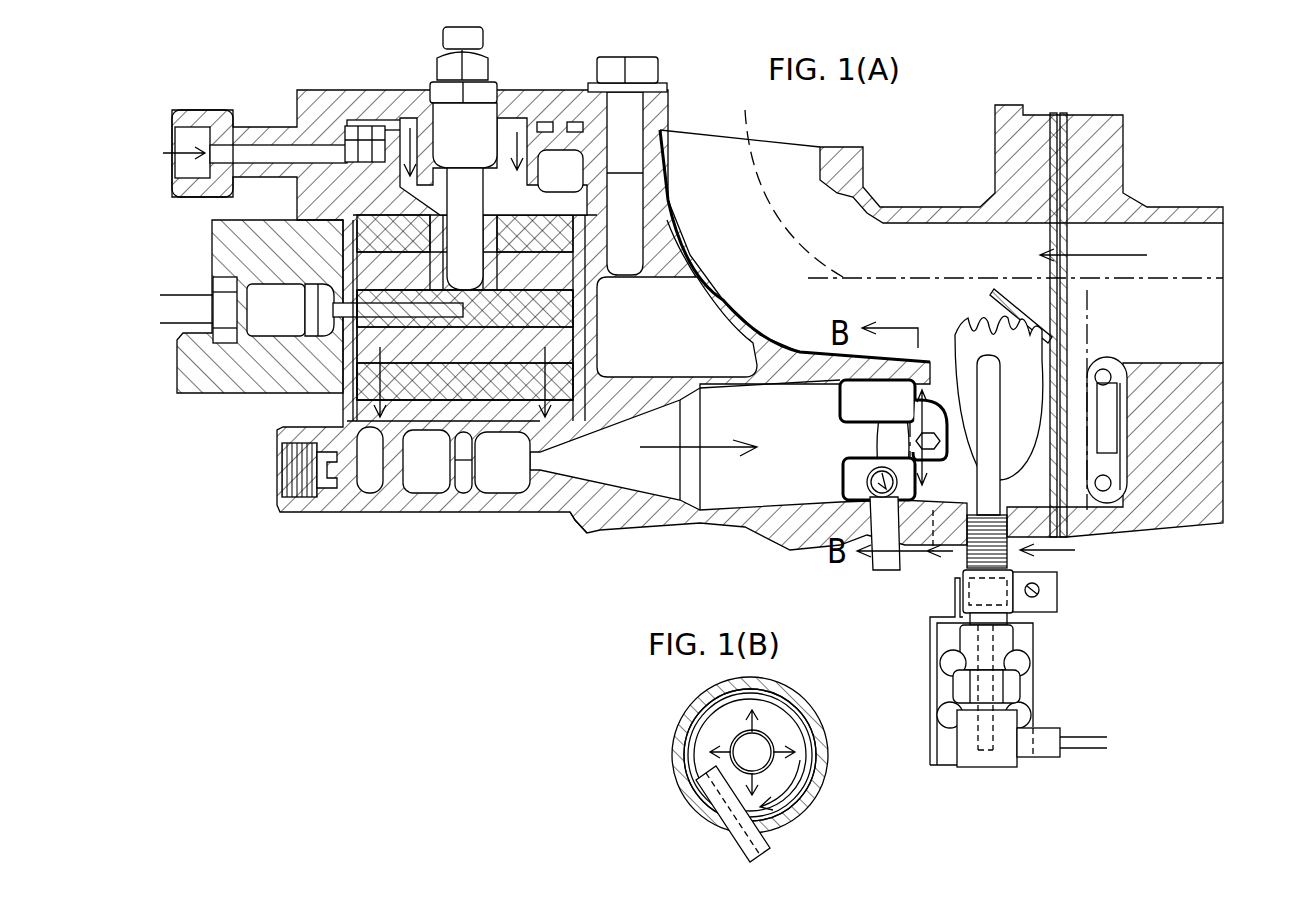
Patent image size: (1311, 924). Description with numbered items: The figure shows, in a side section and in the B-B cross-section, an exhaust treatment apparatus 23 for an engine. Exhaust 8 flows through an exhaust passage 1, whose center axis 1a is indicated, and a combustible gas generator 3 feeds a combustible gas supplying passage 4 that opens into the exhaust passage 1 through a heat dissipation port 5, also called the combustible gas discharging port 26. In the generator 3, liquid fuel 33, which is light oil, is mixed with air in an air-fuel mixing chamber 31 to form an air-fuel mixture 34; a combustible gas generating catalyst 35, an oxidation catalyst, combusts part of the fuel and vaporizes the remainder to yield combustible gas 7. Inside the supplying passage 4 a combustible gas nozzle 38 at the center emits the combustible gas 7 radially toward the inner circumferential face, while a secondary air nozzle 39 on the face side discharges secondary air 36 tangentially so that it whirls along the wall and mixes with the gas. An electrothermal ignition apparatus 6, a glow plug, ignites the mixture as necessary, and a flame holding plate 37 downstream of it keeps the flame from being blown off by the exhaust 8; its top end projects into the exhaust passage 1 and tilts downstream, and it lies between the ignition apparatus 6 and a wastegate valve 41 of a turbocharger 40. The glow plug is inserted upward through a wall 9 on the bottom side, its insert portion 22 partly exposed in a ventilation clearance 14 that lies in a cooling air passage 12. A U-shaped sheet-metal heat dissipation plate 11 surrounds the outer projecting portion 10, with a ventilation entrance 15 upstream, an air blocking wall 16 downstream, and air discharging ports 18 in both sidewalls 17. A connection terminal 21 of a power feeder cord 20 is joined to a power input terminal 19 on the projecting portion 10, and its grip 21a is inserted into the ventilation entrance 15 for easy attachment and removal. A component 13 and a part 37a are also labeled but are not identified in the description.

In FIG. 1A, the exhaust passage 1 is at (1238, 221).
In FIG. 1A, the center axis of the exhaust passage 1a is at (1173, 280).
In FIG. 1A, the combustible gas generator 3 is at (232, 418).
In FIG. 1A, the combustible gas supplying passage 4 is at (757, 504).
In FIG. 1B, the combustible gas supplying passage 4 is at (783, 802).
In FIG. 1A, the heat dissipation port 5 is at (1014, 283).
In FIG. 1A, the combustible gas discharging port 26 is at (976, 250).
In FIG. 1A, the electrothermal ignition apparatus 6 is at (1002, 492).
In FIG. 1A, the combustible gas 7 is at (330, 396).
In FIG. 1B, the combustible gas 7 is at (817, 785).
In FIG. 1A, the exhaust 8 is at (1093, 286).
In FIG. 1A, the wall of the exhaust treatment apparatus 9 is at (1066, 556).
In FIG. 1A, the outer projecting portion 10 is at (1036, 702).
In FIG. 1A, the heat dissipation plate 11 is at (917, 659).
In FIG. 1A, the cooling air passage 12 is at (1198, 702).
In FIG. 1A, the terminal plate 13 is at (1060, 556).
In FIG. 1A, the ventilation clearance 14 is at (953, 557).
In FIG. 1A, the ventilation entrance 15 is at (1054, 727).
In FIG. 1A, the air blocking wall 16 is at (933, 717).
In FIG. 1A, the sidewalls 17 is at (1027, 760).
In FIG. 1A, the air discharging ports 18 is at (1020, 667).
In FIG. 1A, the power input terminal 19 is at (980, 737).
In FIG. 1A, the power feeder cord 20 is at (1087, 750).
In FIG. 1A, the connection terminal 21 is at (970, 747).
In FIG. 1A, the grip 21a is at (1047, 752).
In FIG. 1A, the insert portion 22 is at (942, 449).
In FIG. 1A, the exhaust treatment apparatus 23 is at (662, 533).
In FIG. 1A, the air-fuel mixing chamber 31 is at (411, 118).
In FIG. 1A, the liquid fuel 33 is at (183, 152).
In FIG. 1A, the air-fuel mixture 34 is at (403, 147).
In FIG. 1A, the combustible gas generating catalyst 35 is at (553, 313).
In FIG. 1A, the secondary air 36 is at (843, 403).
In FIG. 1B, the secondary air 36 is at (695, 713).
In FIG. 1A, the flame holding plate 37 is at (1060, 380).
In FIG. 1A, the heater bar 37a is at (1040, 323).
In FIG. 1A, the combustible gas nozzle 38 is at (867, 447).
In FIG. 1B, the combustible gas nozzle 38 is at (731, 737).
In FIG. 1A, the secondary air nozzle 39 is at (881, 560).
In FIG. 1B, the secondary air nozzle 39 is at (710, 817).
In FIG. 1A, the turbocharger 40 is at (1203, 520).
In FIG. 1A, the wastegate valve 41 is at (1117, 425).